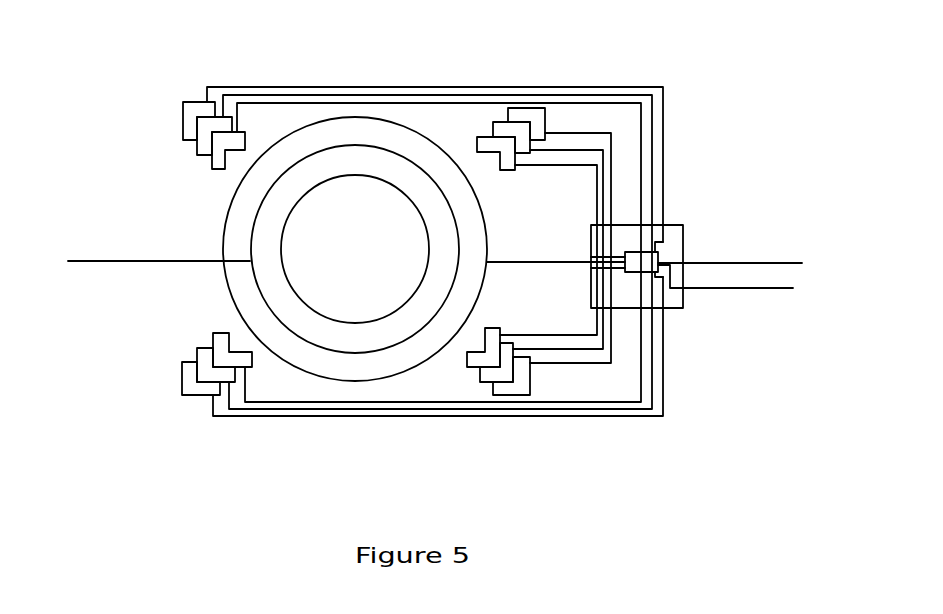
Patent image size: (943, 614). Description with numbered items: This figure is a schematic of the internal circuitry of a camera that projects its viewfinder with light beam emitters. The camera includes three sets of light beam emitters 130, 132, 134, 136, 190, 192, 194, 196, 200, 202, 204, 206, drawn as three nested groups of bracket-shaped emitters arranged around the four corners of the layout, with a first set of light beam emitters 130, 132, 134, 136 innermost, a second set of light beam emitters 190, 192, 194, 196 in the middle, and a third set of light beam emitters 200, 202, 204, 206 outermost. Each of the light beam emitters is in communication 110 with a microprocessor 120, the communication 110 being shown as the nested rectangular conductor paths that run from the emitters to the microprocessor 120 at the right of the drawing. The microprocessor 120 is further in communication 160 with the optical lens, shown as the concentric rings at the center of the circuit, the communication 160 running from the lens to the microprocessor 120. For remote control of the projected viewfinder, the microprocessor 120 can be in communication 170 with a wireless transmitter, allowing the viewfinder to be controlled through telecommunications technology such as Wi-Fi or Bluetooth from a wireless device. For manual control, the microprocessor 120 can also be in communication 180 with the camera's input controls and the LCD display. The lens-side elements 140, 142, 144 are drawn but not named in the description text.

The communication 110 is at (328, 87).
The microprocessor 120 is at (683, 225).
The light beam emitter 130 is at (477, 137).
The light beam emitter 132 is at (467, 368).
The light beam emitter 134 is at (212, 170).
The light beam emitter 136 is at (213, 333).
The rotor core 140 is at (281, 248).
The shaft 142 is at (138, 260).
The rotor ring 144 is at (223, 275).
The communication 160 is at (543, 262).
The communication 170 is at (727, 263).
The communication 180 is at (782, 290).
The light beam emitter 190 is at (493, 122).
The light beam emitter 192 is at (480, 382).
The light beam emitter 194 is at (197, 154).
The light beam emitter 196 is at (197, 348).
The light beam emitter 200 is at (508, 108).
The light beam emitter 202 is at (496, 395).
The light beam emitter 204 is at (181, 138).
The light beam emitter 206 is at (183, 363).